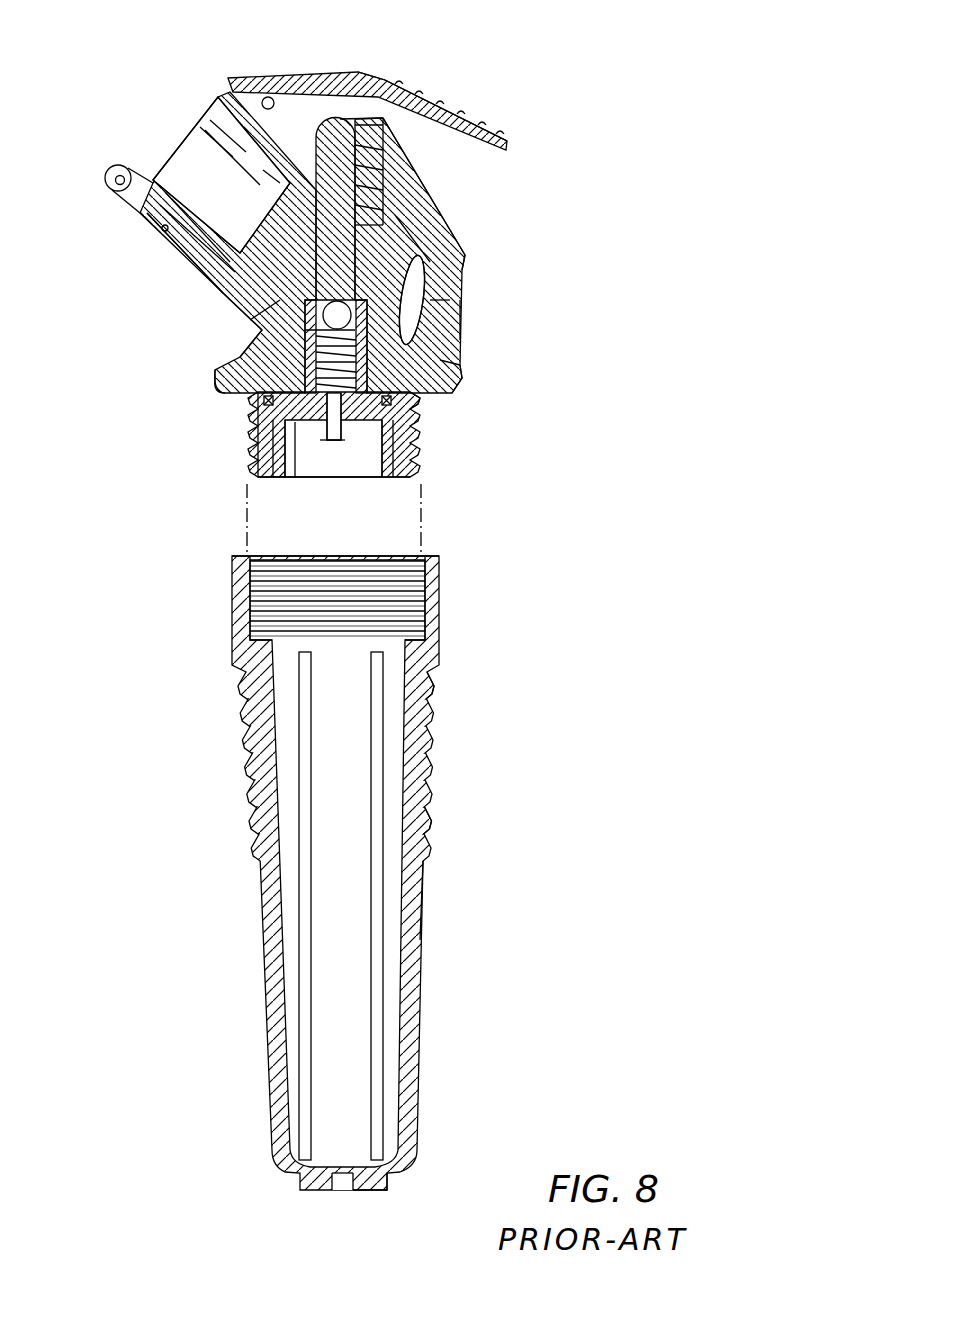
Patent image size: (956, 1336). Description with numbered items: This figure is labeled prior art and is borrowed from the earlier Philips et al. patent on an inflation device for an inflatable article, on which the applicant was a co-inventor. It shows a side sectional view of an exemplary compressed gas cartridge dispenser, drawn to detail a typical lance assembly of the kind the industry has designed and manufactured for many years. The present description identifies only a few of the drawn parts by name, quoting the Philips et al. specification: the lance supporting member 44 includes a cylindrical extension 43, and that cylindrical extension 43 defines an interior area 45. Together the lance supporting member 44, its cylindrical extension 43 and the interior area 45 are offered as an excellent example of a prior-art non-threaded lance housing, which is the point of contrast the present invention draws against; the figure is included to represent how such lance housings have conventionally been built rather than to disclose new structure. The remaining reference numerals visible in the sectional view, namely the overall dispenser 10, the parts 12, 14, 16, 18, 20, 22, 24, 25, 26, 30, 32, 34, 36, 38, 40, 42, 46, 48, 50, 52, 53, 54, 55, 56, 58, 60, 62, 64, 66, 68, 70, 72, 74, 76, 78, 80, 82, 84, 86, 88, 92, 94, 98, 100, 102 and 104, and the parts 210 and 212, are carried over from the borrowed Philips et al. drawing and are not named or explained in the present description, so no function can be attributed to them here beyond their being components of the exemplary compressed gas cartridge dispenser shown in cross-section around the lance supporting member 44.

The dispenser assembly 10 is at (187, 686).
The container body 12 is at (413, 920).
The housing 14 is at (437, 257).
The pivot 16 is at (162, 232).
The threads 18 is at (440, 593).
The bottom flange 20 is at (373, 1190).
The rib 22 is at (400, 808).
The side wall 24 is at (432, 862).
The inner tube 25 is at (366, 1038).
The rib 26 is at (432, 740).
The thread wall 30 is at (438, 641).
The closure 32 is at (250, 466).
The inner tube 34 is at (304, 1003).
The vent 36 is at (339, 1190).
The base 38 is at (311, 479).
The lever 40 is at (196, 126).
The wall 42 is at (288, 478).
The cylindrical extension 43 is at (377, 474).
The lance supporting member 44 is at (306, 408).
The interior area 45 is at (332, 474).
The thread 46 is at (258, 438).
The thread 48 is at (410, 432).
The chamber 50 is at (357, 417).
The housing body 52 is at (422, 394).
The seal 53 is at (262, 404).
The passage 54 is at (334, 448).
The seal 55 is at (250, 424).
The wall 56 is at (262, 343).
The shoulder 58 is at (455, 379).
The passage 60 is at (450, 300).
The wall 62 is at (240, 322).
The spring 64 is at (448, 335).
The flange 66 is at (243, 388).
The wall 68 is at (440, 360).
The passage 70 is at (450, 318).
The wall 72 is at (393, 220).
The wall 74 is at (250, 300).
The stem 76 is at (300, 147).
The serration 78 is at (383, 172).
The slot 80 is at (440, 273).
The plunger 82 is at (336, 116).
The serration 84 is at (381, 190).
The ball valve 86 is at (322, 205).
The nozzle 88 is at (394, 85).
The serrated wall 92 is at (370, 166).
The pin 94 is at (282, 78).
The lid joint 98 is at (368, 74).
The lid 100 is at (258, 77).
The arm 102 is at (218, 268).
The lever face 104 is at (178, 186).
The pivot hole 210 is at (123, 174).
The trigger ring 212 is at (108, 166).